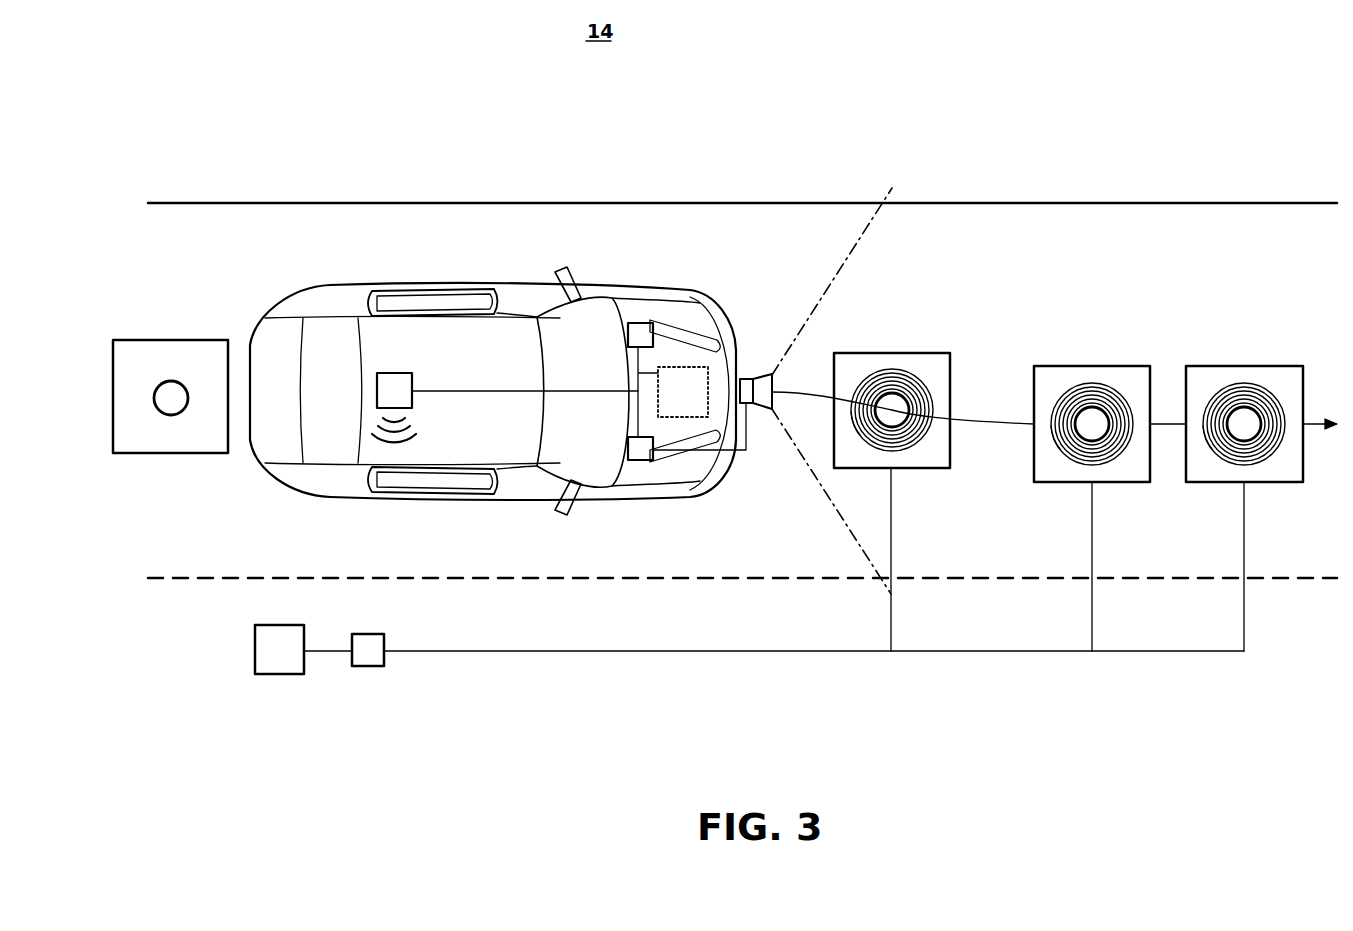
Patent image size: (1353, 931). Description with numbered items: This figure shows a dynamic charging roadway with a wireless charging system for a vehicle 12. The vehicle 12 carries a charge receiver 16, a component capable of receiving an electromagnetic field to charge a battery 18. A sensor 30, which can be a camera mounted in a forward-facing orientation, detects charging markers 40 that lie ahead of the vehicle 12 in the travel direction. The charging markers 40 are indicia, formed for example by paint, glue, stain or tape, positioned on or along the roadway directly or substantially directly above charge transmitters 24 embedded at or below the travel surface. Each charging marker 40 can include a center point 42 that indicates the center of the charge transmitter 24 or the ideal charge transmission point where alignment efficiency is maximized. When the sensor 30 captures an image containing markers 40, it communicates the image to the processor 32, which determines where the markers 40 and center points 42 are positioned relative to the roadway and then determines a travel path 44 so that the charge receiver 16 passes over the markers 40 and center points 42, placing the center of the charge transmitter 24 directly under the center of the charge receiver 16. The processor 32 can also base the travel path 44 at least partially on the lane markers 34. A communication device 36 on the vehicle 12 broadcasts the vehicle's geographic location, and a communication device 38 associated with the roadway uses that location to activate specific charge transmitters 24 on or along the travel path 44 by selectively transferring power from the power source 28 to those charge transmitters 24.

The vehicle 12 is at (493, 499).
The charge receiver 16 is at (700, 366).
The battery 18 is at (638, 322).
The charge transmitter 24 is at (862, 370).
The power source 28 is at (272, 675).
The sensor 30 is at (756, 378).
The processor 32 is at (640, 461).
The lane markers 34 is at (1016, 202).
The communication device 36 is at (394, 372).
The communication device 38 is at (368, 667).
The charging marker 40 is at (870, 469).
The center point 42 is at (892, 392).
The travel path 44 is at (992, 414).